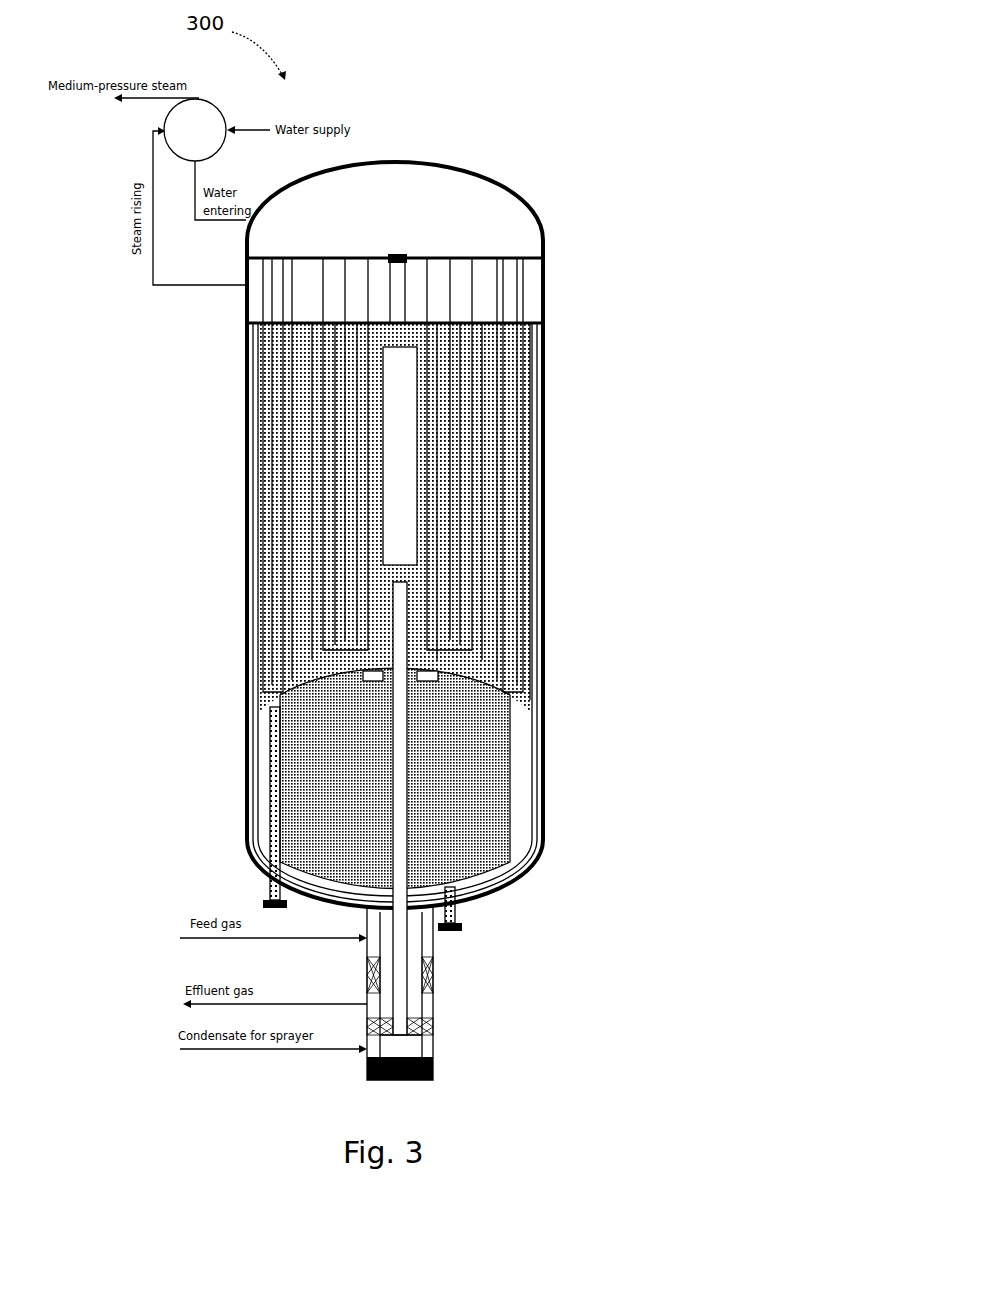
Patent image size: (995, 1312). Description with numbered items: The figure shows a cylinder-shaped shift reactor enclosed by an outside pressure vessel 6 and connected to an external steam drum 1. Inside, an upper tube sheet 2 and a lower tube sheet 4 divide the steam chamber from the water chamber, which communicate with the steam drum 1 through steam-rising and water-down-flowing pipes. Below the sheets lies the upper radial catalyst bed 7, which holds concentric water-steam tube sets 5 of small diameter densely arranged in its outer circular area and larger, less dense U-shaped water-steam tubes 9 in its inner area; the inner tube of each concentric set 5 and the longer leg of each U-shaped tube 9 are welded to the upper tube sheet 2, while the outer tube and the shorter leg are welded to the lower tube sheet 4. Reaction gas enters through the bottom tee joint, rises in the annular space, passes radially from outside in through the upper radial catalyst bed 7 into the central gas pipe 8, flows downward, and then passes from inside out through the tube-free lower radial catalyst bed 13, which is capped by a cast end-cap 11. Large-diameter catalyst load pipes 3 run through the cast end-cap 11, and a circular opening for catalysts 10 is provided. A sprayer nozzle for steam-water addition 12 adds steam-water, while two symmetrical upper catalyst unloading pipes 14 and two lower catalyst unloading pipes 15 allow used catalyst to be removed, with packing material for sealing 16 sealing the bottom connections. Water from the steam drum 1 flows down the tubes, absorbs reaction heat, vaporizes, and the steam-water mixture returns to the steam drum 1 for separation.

The external steam drum 1 is at (224, 113).
The upper tube sheet 2 is at (388, 257).
The catalyst load pipes 3 is at (406, 282).
The lower tube sheet 4 is at (424, 323).
The concentric water-steam tube sets 5 is at (512, 340).
The outside pressure vessel 6 is at (545, 367).
The upper radial catalyst bed 7 is at (533, 423).
The central gas pipe 8 is at (413, 543).
The U-shaped water-steam tubes 9 is at (450, 556).
The circular opening for catalysts 10 is at (433, 667).
The cast end-cap 11 is at (485, 680).
The sprayer nozzle for steam-water addition 12 is at (407, 790).
The lower radial catalyst bed 13 is at (527, 768).
The upper catalyst unloading pipes 14 is at (280, 850).
The lower catalyst unloading pipes 15 is at (457, 910).
The packing material for sealing 16 is at (433, 1020).